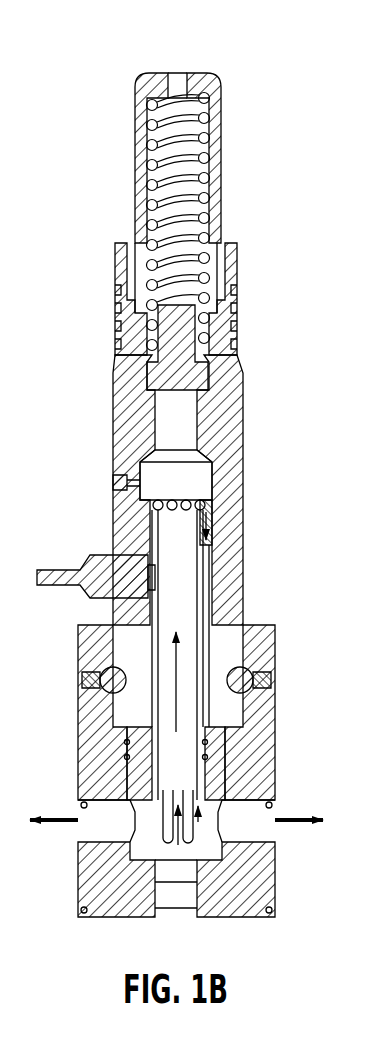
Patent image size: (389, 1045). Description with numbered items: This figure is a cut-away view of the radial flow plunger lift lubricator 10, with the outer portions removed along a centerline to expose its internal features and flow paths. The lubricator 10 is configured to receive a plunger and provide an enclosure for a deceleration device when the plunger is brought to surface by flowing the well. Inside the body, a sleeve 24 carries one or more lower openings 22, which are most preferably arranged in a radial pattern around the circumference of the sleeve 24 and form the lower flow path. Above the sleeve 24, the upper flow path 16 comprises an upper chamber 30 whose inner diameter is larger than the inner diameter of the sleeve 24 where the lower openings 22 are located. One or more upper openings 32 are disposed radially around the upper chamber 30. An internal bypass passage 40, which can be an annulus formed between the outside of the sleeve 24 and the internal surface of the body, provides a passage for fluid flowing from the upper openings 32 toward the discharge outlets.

The radial flow plunger lift lubricator 10 is at (268, 45).
The upper flow path 16 is at (205, 492).
The lower openings 22 is at (195, 812).
The sleeve 24 is at (187, 650).
The upper chamber 30 is at (207, 475).
The upper openings 32 is at (162, 523).
The internal bypass passage 40 is at (220, 588).